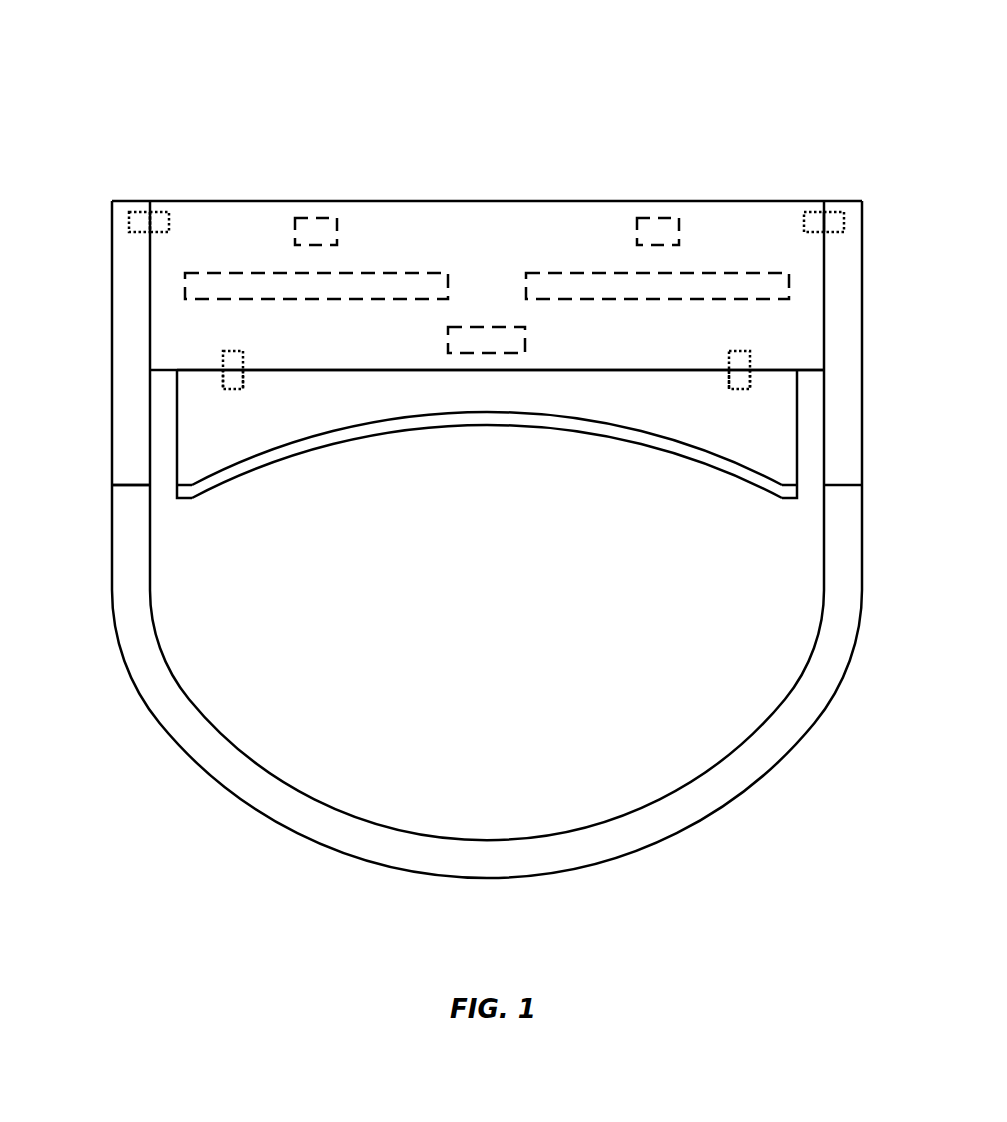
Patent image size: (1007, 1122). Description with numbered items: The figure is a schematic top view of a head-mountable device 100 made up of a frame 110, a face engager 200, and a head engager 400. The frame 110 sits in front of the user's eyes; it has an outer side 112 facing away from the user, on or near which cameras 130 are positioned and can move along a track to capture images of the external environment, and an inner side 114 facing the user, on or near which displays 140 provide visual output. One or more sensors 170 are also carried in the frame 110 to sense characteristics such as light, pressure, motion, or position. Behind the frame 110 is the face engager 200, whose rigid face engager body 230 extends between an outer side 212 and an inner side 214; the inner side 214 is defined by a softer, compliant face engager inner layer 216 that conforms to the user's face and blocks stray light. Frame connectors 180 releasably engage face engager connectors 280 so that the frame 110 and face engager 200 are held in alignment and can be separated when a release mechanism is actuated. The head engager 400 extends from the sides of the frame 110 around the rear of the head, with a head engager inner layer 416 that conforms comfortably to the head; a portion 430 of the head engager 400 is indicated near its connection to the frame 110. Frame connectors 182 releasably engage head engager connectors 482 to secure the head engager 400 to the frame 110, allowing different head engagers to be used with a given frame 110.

The head-mountable device 100 is at (141, 74).
The frame 110 is at (213, 201).
The outer side 112 is at (487, 201).
The inner side 114 is at (810, 370).
The cameras 130 is at (310, 218).
The displays 140 is at (245, 273).
The sensors 170 is at (485, 327).
The frame connectors 180 is at (243, 365).
The frame connectors 182 is at (160, 212).
The face engager 200 is at (177, 400).
The outer side 212 is at (583, 370).
The inner side 214 is at (597, 430).
The face engager inner layer 216 is at (497, 418).
The face engager body 230 is at (197, 440).
The face engager connectors 280 is at (233, 390).
The head engager 400 is at (130, 272).
The head engager inner layer 416 is at (485, 850).
The inner strap portion 430 is at (130, 345).
The head engager connectors 482 is at (137, 212).